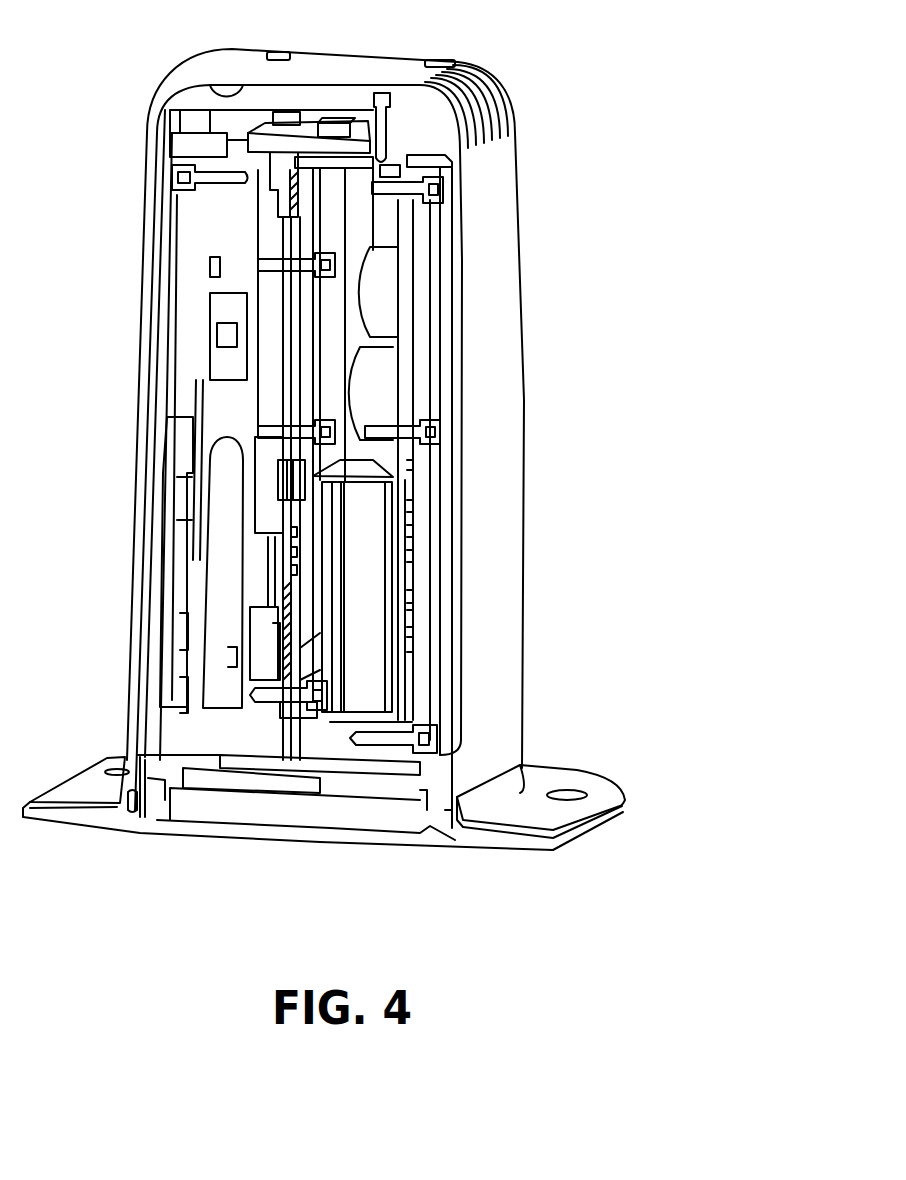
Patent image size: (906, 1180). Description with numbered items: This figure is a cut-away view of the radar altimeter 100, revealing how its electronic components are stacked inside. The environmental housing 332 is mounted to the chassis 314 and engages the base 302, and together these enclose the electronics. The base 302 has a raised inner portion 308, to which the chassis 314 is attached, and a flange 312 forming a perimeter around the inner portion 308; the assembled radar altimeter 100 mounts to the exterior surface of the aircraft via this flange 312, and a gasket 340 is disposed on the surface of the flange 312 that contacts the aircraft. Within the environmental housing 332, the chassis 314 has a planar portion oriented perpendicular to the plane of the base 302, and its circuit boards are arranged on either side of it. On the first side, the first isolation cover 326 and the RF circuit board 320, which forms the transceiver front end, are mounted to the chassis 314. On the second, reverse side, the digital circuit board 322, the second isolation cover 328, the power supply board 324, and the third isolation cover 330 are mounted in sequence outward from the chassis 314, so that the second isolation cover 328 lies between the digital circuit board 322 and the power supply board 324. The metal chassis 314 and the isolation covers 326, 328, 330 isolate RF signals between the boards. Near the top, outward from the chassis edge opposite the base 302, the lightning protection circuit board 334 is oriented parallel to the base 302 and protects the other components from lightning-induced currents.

The radar altimeter 100 is at (700, 193).
The base 302 is at (100, 862).
The inner portion 308 is at (163, 780).
The flange 312 is at (580, 830).
The chassis 314 is at (227, 140).
The RF circuit board 320 is at (173, 272).
The digital circuit board 322 is at (290, 347).
The power supply board 324 is at (402, 500).
The first isolation cover 326 is at (170, 233).
The second isolation cover 328 is at (325, 295).
The third isolation cover 330 is at (432, 587).
The environmental housing 332 is at (500, 152).
The lightning protection circuit board 334 is at (305, 125).
The gasket 340 is at (547, 775).